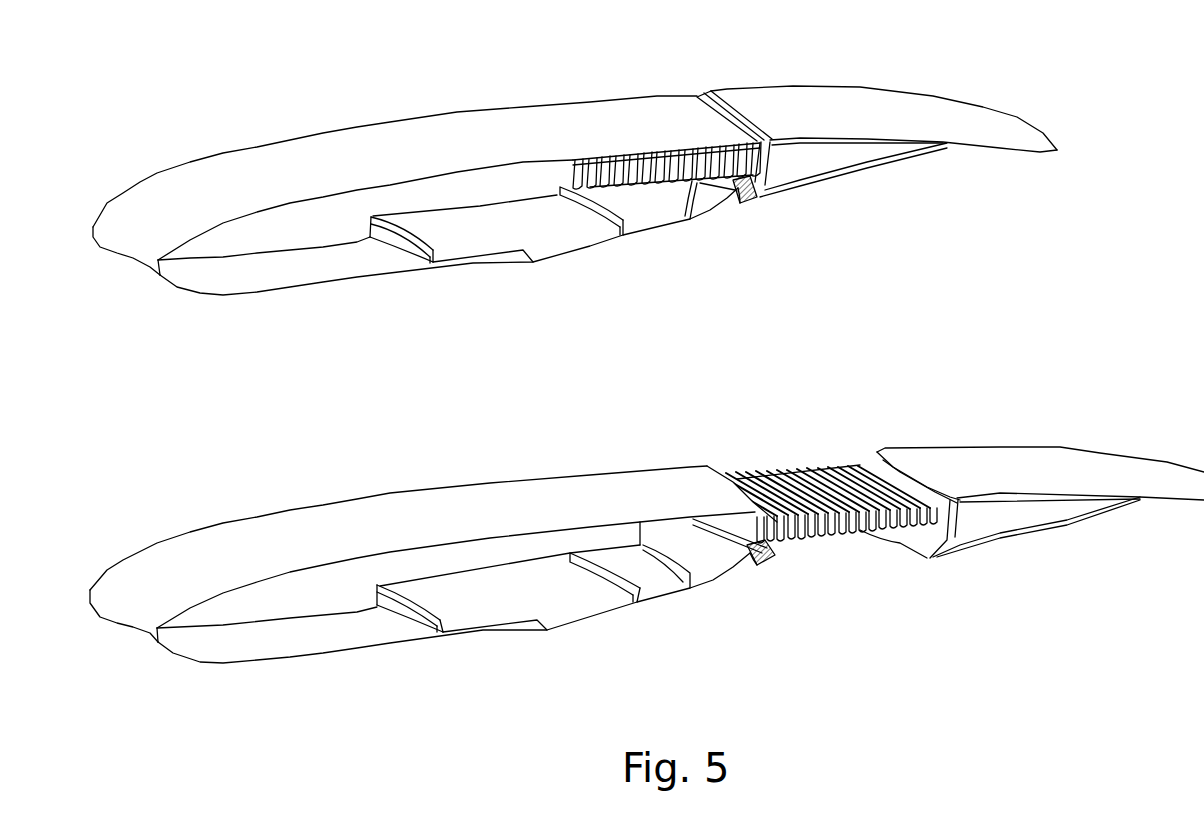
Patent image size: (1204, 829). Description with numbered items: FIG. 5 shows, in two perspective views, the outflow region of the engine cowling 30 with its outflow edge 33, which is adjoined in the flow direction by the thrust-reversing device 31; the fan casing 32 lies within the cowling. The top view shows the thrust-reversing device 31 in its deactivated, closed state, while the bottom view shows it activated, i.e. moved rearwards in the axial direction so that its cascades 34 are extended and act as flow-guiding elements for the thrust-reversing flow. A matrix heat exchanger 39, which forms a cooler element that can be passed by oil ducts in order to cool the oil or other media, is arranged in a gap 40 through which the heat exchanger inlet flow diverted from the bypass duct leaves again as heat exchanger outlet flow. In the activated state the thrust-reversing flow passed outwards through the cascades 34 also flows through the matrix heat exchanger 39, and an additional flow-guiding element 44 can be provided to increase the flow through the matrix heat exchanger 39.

The engine cowling 30 is at (373, 150).
The thrust-reversing device 31 is at (910, 113).
The fan casing 32 is at (533, 230).
The outflow edge 33 is at (703, 97).
The cascades 34 is at (617, 157).
The matrix heat exchanger 39 is at (733, 203).
The gap 40 is at (735, 118).
The additional flow-guiding element 44 is at (757, 197).